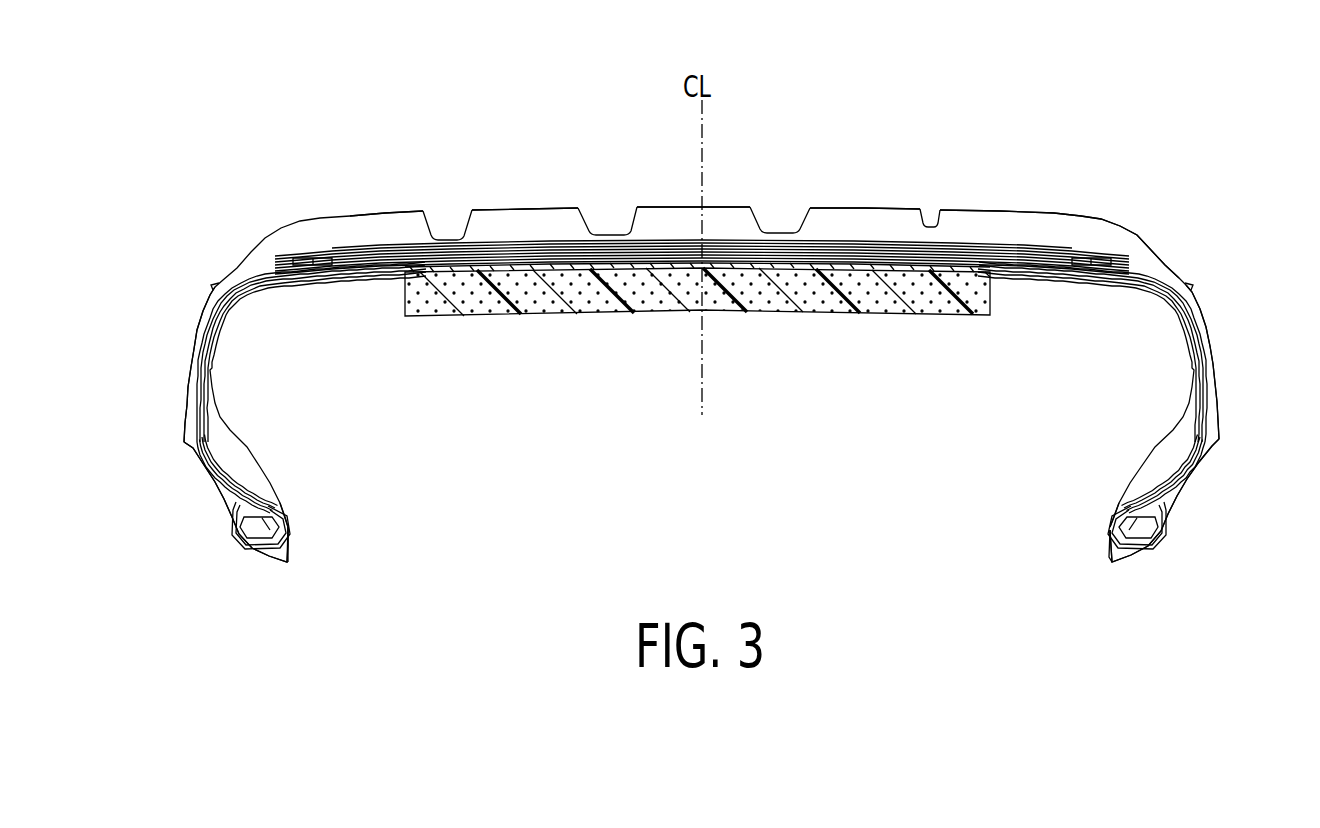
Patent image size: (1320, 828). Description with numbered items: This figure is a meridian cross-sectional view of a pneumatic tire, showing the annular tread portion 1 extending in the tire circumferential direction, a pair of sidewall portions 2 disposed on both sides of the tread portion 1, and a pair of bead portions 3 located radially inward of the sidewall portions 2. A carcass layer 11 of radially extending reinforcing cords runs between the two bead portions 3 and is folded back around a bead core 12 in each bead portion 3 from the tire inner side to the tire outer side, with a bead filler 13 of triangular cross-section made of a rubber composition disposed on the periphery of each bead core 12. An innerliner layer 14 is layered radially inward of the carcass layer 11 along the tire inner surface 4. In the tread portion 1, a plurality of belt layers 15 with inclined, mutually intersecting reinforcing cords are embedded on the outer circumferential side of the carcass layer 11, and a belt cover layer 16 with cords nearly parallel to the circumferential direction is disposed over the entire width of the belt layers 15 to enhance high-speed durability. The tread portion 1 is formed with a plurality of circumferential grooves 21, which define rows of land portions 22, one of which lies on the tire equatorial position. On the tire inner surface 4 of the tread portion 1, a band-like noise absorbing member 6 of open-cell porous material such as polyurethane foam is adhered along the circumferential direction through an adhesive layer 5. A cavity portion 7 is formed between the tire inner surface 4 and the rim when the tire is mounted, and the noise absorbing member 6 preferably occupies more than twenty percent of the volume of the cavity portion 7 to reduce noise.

The tread portion 1 is at (871, 207).
The sidewall portions 2 is at (192, 347).
The bead portions 3 is at (230, 512).
The tire inner surface 4 is at (340, 277).
The adhesive layer 5 is at (533, 272).
The noise absorbing member 6 is at (697, 270).
The cavity portion 7 is at (848, 424).
The carcass layer 11 is at (1150, 262).
The bead core 12 is at (276, 517).
The bead filler 13 is at (262, 493).
The innerliner layer 14 is at (290, 530).
The belt layers 15 is at (1068, 262).
The belt cover layer 16 is at (1067, 218).
The circumferential grooves 21 is at (428, 228).
The land portions 22 is at (347, 216).